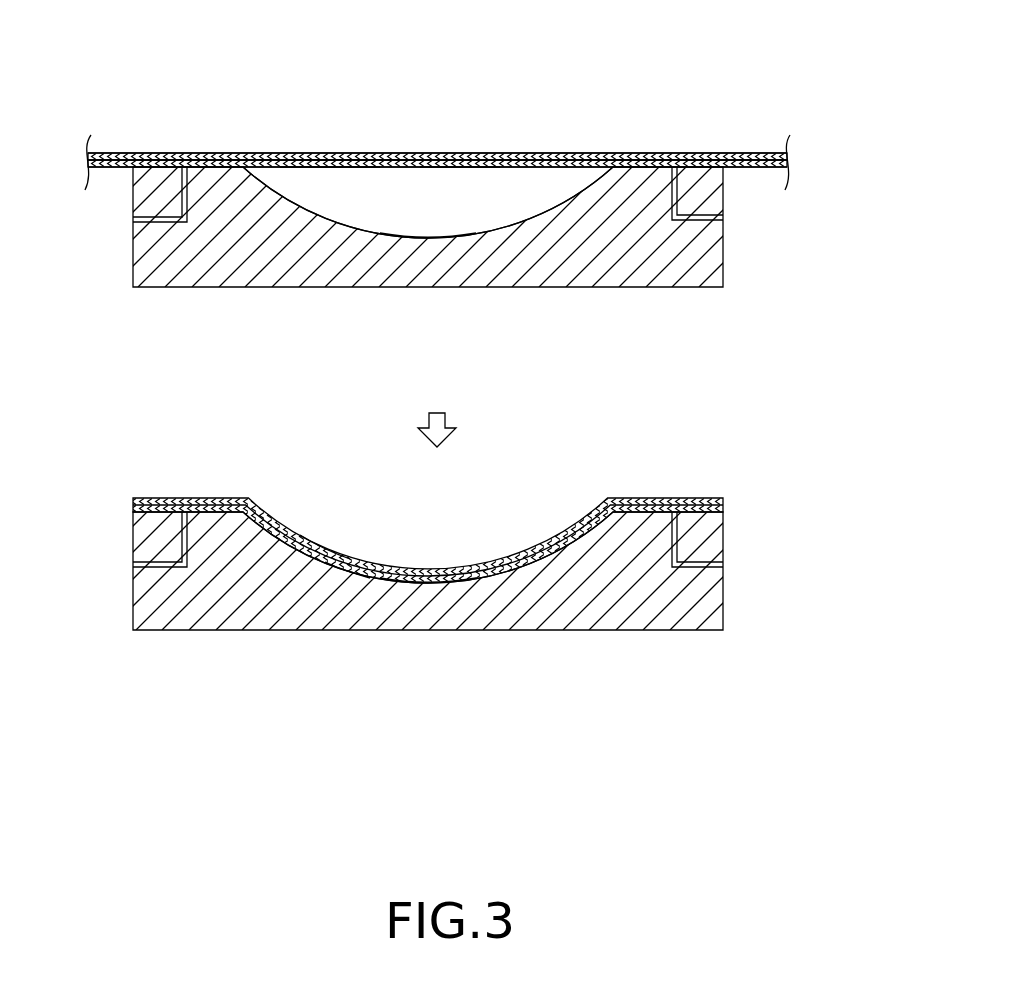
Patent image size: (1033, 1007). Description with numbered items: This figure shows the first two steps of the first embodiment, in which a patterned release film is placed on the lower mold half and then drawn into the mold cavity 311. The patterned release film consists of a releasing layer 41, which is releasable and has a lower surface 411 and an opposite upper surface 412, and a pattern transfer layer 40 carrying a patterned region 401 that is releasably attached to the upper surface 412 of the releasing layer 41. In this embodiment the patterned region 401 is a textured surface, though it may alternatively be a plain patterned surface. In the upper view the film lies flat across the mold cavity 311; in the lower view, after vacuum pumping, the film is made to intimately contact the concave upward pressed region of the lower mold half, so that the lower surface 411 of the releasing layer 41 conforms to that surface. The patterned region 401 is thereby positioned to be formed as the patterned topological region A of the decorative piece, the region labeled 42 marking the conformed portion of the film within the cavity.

The pattern transfer layer 40 is at (420, 122).
The releasing layer 41 is at (252, 160).
The lower surface 411 is at (320, 168).
The upper surface 412 is at (344, 166).
The patterned region 401 is at (452, 168).
The mold cavity 311 is at (503, 170).
The formed curved portion of film 42 is at (425, 584).
The patterned topological region A is at (362, 575).